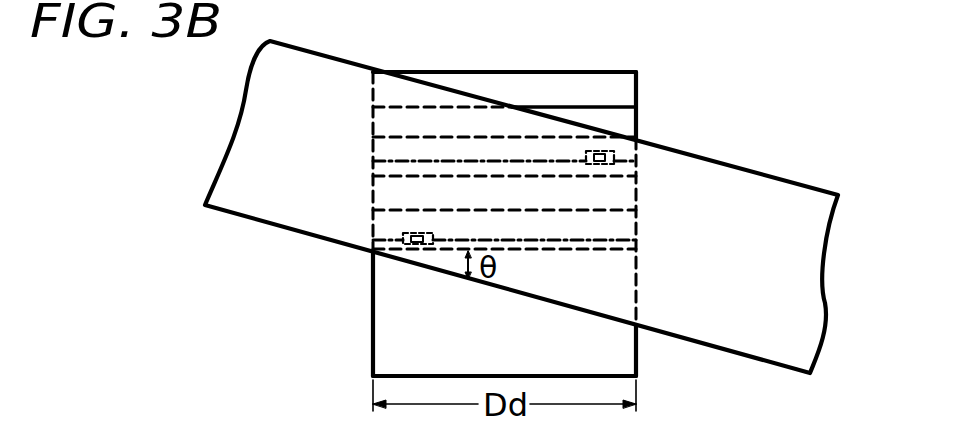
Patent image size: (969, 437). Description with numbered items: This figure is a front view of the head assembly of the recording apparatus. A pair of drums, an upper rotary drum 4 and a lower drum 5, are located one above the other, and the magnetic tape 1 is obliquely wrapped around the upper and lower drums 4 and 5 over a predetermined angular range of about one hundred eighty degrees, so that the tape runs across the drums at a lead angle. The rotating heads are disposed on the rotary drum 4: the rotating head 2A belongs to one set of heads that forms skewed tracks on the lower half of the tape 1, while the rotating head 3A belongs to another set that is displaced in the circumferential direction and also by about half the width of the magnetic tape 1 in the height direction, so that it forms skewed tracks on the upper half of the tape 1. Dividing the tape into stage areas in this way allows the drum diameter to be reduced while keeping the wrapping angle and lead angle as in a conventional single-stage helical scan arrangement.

The magnetic tape 1 is at (723, 163).
The rotating head 2A is at (427, 232).
The rotating head 3A is at (641, 165).
The rotary drum 4 is at (595, 72).
The drum 5 is at (373, 298).